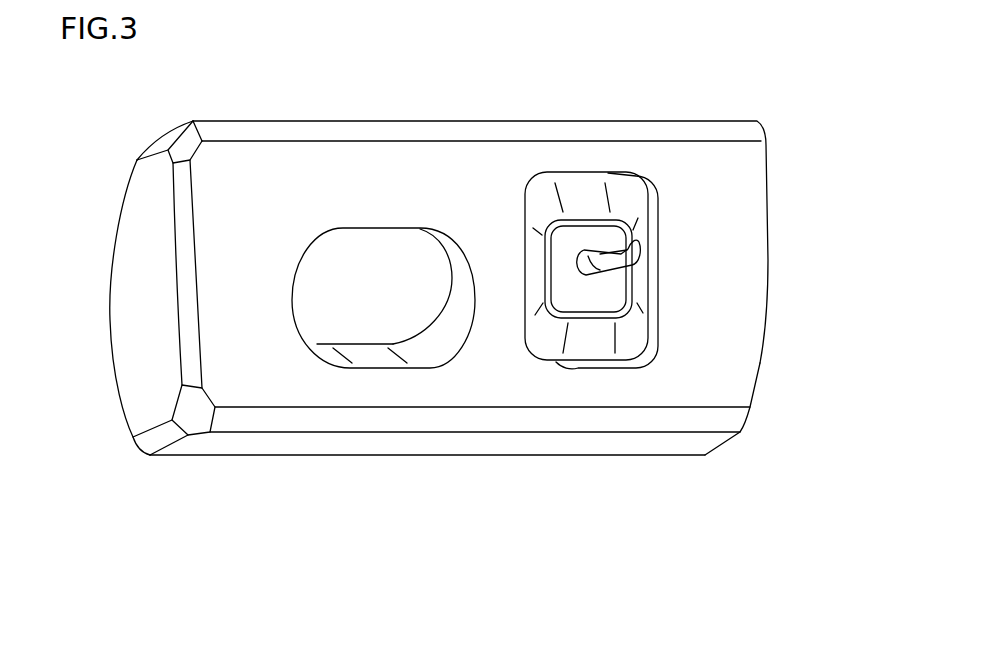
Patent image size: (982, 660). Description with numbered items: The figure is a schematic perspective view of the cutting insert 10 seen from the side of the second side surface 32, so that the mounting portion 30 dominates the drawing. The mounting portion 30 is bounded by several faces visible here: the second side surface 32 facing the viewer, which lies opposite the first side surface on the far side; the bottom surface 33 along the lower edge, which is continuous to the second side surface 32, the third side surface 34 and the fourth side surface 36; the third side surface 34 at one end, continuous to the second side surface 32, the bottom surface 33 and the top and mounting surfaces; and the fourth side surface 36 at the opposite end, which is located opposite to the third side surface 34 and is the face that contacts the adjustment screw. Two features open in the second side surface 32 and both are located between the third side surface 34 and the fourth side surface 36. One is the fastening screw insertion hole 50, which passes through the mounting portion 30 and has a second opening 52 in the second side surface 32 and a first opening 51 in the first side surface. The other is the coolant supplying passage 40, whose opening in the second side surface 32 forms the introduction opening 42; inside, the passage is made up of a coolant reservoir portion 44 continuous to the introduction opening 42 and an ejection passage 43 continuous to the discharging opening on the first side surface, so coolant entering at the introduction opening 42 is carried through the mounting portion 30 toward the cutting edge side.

The cutting insert 10 is at (755, 105).
The mounting portion 30 is at (160, 506).
The second side surface 32 is at (493, 367).
The bottom surface 33 is at (397, 440).
The third side surface 34 is at (760, 363).
The fourth side surface 36 is at (158, 363).
The coolant supplying passage 40 is at (537, 78).
The introduction opening 42 is at (523, 250).
The ejection passage 43 is at (623, 240).
The coolant reservoir portion 44 is at (578, 198).
The fastening screw insertion hole 50 is at (342, 78).
The first opening 51 is at (397, 340).
The second opening 52 is at (443, 360).